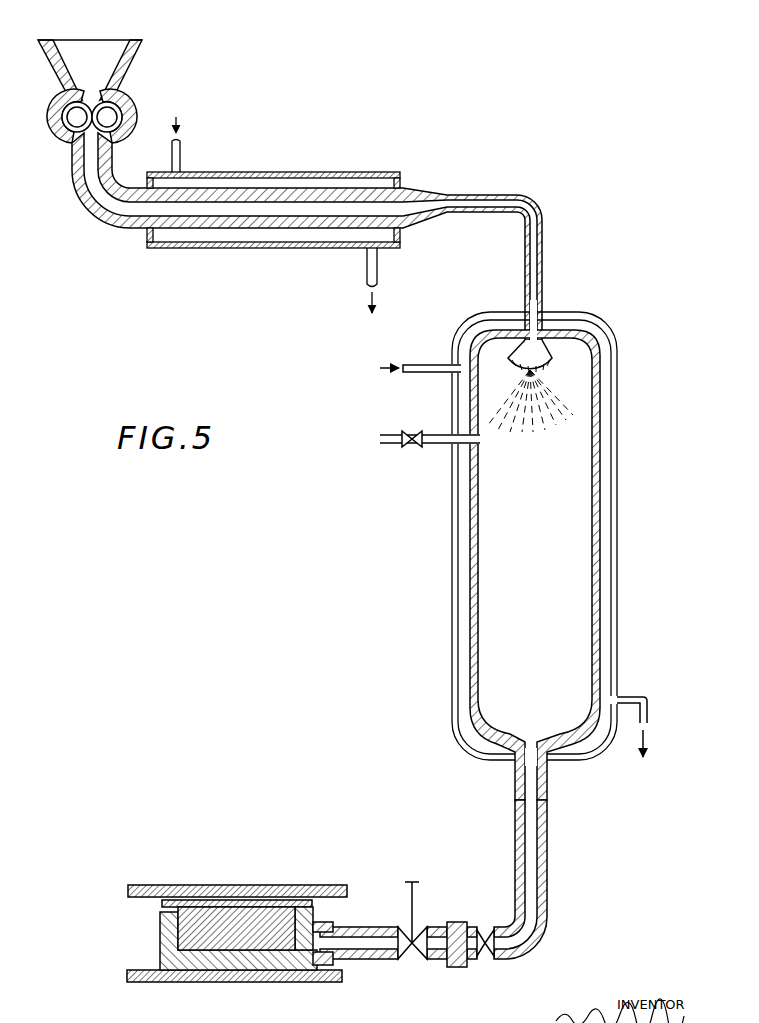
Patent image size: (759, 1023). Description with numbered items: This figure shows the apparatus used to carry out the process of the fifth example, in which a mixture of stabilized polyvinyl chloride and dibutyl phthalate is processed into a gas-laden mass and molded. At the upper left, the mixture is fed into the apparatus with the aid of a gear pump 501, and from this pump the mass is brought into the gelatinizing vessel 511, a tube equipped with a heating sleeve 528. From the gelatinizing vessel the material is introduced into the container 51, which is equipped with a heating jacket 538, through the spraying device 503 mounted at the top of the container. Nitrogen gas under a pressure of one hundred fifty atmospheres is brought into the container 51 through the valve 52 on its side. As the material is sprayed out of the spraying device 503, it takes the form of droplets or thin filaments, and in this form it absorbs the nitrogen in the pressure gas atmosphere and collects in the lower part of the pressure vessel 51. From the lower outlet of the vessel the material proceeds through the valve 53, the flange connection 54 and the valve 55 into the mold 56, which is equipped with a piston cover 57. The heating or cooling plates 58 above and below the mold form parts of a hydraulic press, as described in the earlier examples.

The gear pump 501 is at (128, 107).
The gelatinizing vessel 511 is at (237, 228).
The heating sleeve 528 is at (330, 152).
The spraying device 503 is at (549, 348).
The valve 52 is at (412, 448).
The container 51 is at (472, 557).
The heating jacket 538 is at (462, 630).
The valve 53 is at (496, 906).
The flange connection 54 is at (455, 968).
The valve 55 is at (400, 960).
The mold 56 is at (168, 955).
The piston cover 57 is at (190, 925).
The heating or cooling plates 58 is at (291, 866).